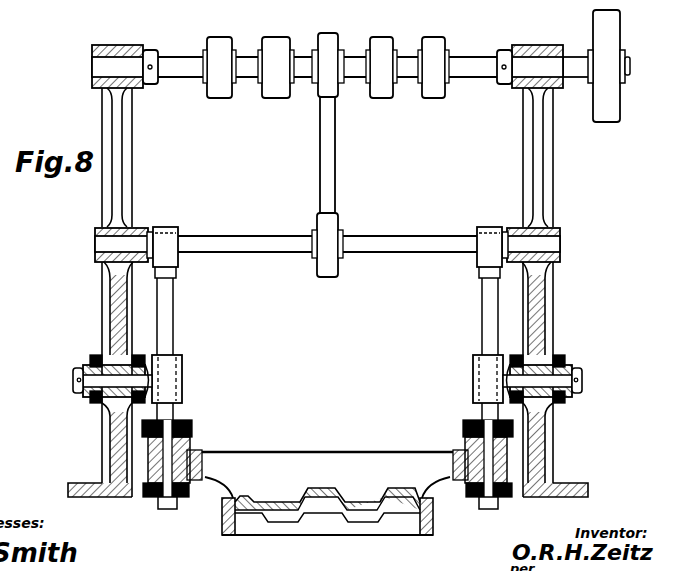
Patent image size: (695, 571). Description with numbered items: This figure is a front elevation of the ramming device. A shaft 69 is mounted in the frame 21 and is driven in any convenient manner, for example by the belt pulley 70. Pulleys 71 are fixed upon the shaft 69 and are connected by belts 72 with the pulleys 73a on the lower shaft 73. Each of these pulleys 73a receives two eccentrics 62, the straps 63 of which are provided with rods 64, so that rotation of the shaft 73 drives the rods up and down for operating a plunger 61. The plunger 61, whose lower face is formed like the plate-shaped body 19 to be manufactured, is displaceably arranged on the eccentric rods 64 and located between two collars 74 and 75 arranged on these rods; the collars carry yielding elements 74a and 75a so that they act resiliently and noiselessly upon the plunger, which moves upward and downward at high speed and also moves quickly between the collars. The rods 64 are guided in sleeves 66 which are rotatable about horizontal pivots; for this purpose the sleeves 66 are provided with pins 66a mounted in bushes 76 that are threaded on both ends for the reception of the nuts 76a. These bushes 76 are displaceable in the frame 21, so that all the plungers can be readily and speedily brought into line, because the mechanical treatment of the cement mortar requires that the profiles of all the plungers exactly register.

The molded product / tray 19 is at (327, 511).
The frame 21 is at (122, 156).
The plunger 61 is at (327, 474).
The eccentrics 62 is at (181, 234).
The straps 63 is at (163, 240).
The rods 64 is at (167, 322).
The sleeves 66 is at (180, 377).
The pins 66a is at (92, 378).
The shaft 69 is at (105, 67).
The belt pulley 70 is at (609, 66).
The pulleys 71 is at (223, 90).
The belts 72 is at (326, 152).
The shaft 73 is at (387, 247).
The pulleys 73a is at (319, 217).
The collar 74 is at (187, 422).
The yielding element 74a is at (182, 432).
The collar 75 is at (184, 498).
The yielding element 75a is at (153, 498).
The bushes 76 is at (107, 360).
The nuts 76a is at (148, 352).